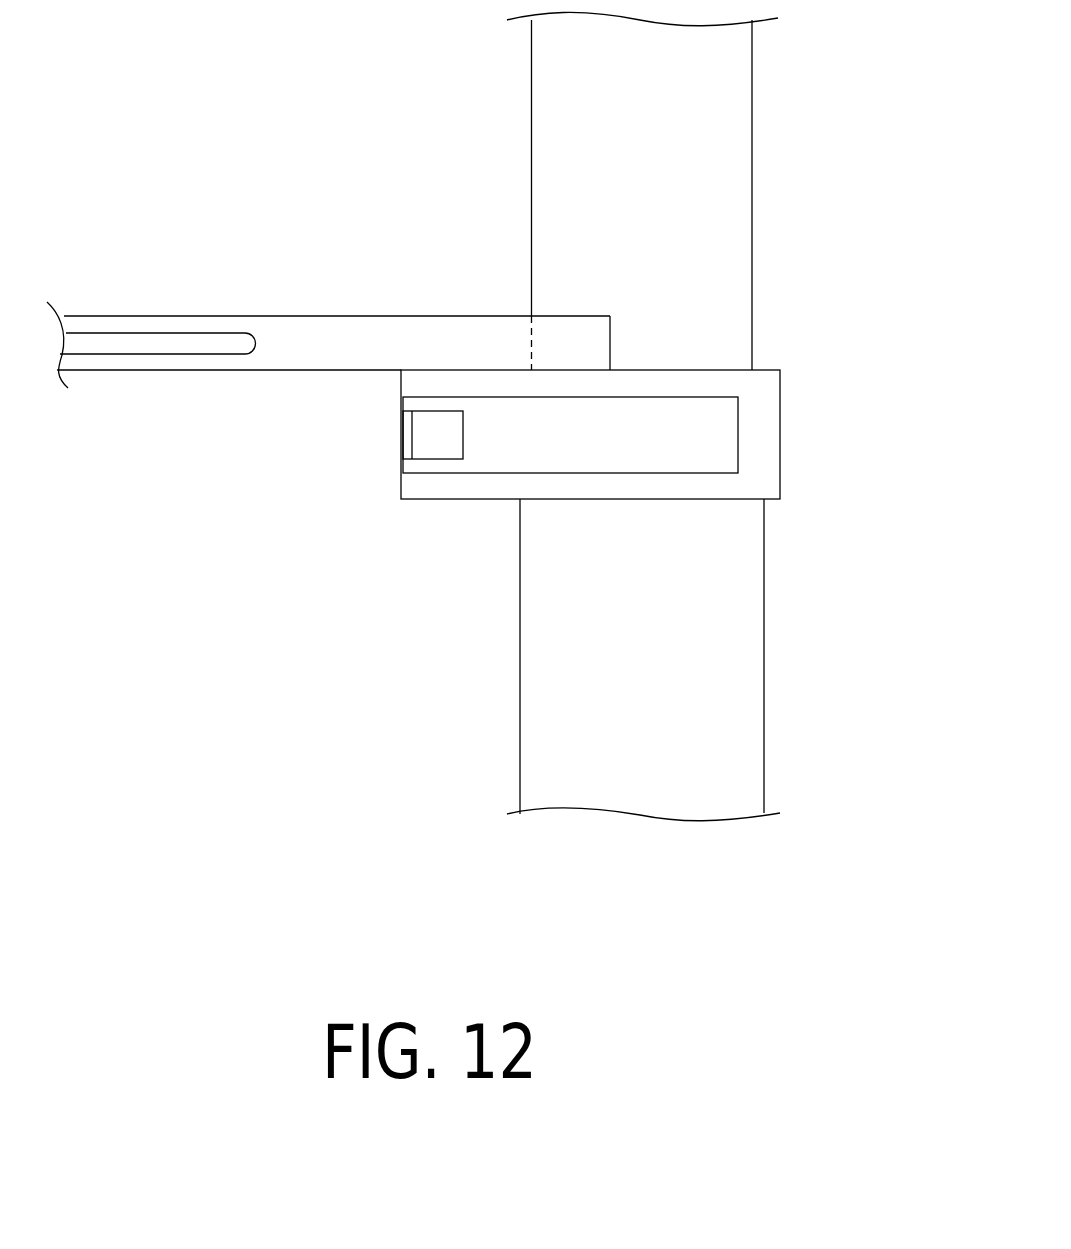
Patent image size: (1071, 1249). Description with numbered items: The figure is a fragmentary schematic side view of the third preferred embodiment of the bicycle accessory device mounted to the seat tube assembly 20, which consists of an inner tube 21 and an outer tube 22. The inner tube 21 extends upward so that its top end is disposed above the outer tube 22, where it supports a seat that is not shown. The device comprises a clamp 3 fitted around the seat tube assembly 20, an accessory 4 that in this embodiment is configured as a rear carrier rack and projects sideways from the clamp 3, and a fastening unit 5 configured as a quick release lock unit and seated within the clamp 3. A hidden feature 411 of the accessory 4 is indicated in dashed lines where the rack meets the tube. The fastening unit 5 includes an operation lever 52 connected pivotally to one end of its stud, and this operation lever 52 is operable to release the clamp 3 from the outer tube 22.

The seat tube assembly 20 is at (752, 110).
The inner tube 21 is at (740, 199).
The outer tube 22 is at (745, 669).
The accessory 4 is at (287, 316).
The hole of arm 411 is at (530, 345).
The clamp 3 is at (780, 433).
The fastening unit 5 is at (435, 473).
The operation lever 52 is at (497, 453).